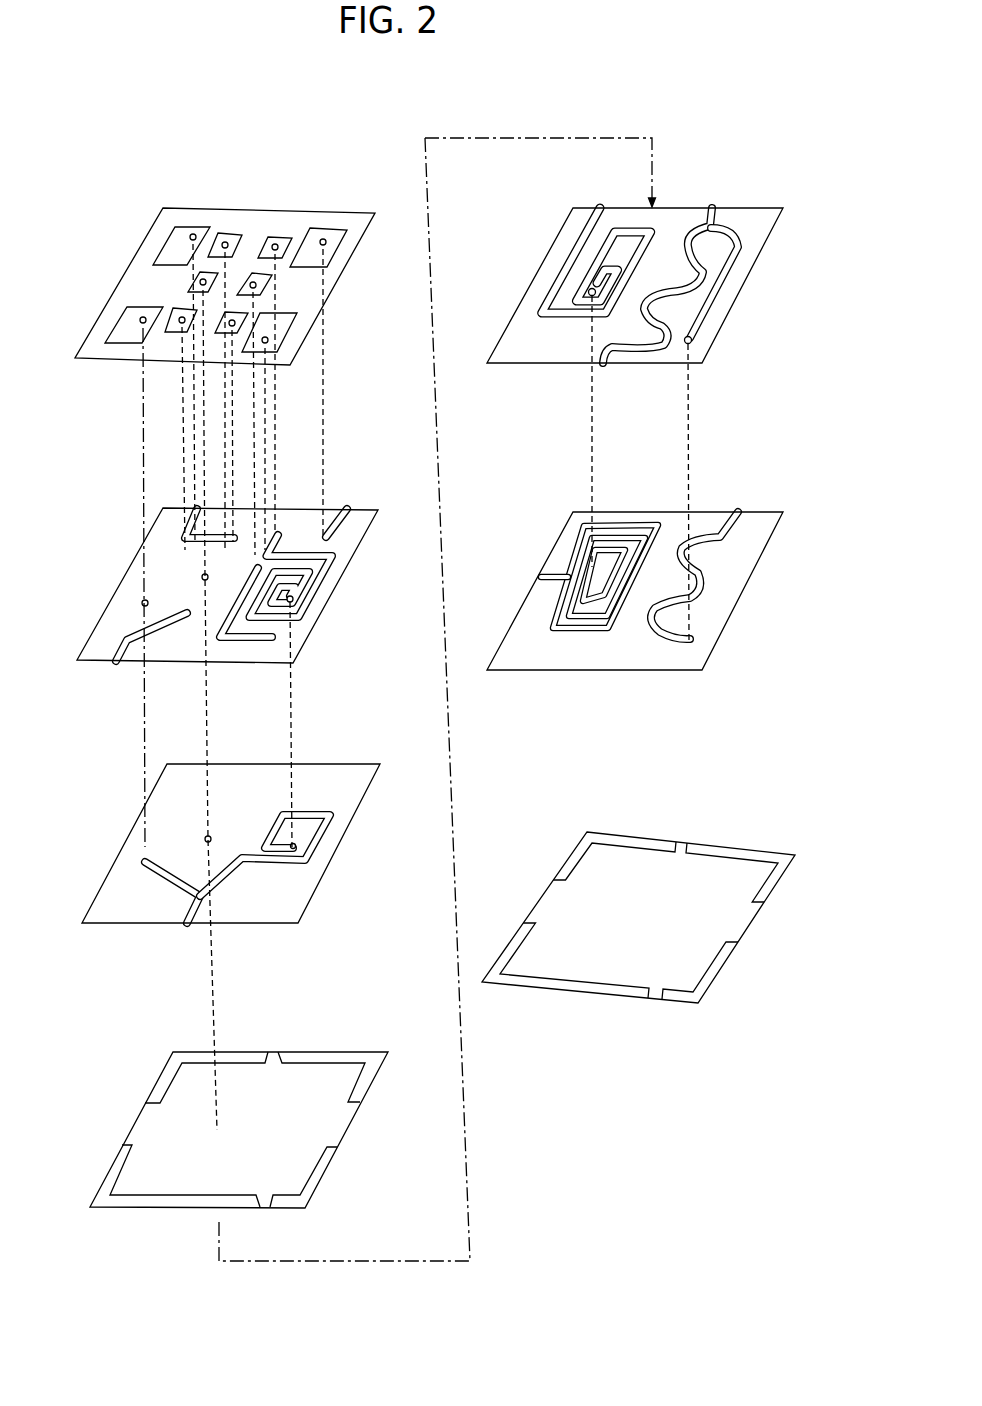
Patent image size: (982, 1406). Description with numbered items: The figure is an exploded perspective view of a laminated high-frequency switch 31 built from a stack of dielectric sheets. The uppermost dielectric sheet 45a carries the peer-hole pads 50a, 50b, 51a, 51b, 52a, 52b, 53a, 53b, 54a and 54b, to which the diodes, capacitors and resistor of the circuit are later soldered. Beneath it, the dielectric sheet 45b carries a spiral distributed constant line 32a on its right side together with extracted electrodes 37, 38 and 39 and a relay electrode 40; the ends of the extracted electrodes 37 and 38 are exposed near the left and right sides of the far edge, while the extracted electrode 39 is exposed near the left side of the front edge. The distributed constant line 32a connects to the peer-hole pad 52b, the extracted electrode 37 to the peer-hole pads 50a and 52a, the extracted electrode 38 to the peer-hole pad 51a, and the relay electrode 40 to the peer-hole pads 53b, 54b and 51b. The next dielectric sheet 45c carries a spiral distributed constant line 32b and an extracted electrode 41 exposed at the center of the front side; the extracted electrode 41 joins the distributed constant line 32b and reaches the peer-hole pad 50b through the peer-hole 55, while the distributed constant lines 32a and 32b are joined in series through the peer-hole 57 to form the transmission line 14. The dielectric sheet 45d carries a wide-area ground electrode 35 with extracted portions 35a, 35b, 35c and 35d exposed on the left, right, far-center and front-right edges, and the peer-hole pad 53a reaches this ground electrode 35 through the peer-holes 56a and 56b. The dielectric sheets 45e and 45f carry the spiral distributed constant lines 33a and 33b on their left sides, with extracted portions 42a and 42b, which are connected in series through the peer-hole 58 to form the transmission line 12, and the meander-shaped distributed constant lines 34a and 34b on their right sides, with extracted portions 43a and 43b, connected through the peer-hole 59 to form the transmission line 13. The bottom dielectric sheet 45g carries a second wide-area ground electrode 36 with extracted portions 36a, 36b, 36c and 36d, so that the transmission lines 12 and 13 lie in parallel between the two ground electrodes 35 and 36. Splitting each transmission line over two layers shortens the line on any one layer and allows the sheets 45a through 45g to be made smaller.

The transmission line 12 is at (535, 188).
The transmission line 13 is at (723, 153).
The transmission line 14 is at (367, 577).
The high-frequency switch 31 is at (138, 208).
The distributed constant line 32a is at (317, 595).
The distributed constant line 32b is at (317, 845).
The distributed constant line 33a is at (577, 235).
The distributed constant line 33b is at (578, 632).
The distributed constant line 34a is at (712, 228).
The distributed constant line 34b is at (710, 582).
The ground electrode 35 is at (241, 1134).
The extracted portion 35a is at (148, 1127).
The extracted portion 35b is at (340, 1127).
The extracted portion 35c is at (273, 1052).
The extracted portion 35d is at (262, 1203).
The ground electrode 36 is at (647, 935).
The extracted portion 36a is at (550, 905).
The extracted portion 36b is at (740, 923).
The extracted portion 36c is at (683, 843).
The extracted portion 36d is at (652, 997).
The extracted electrode 37 is at (192, 523).
The extracted electrode 38 is at (350, 515).
The extracted electrode 39 is at (130, 637).
The relay electrode 40 is at (247, 645).
The extracted electrode 41 is at (180, 903).
The extracted portion 42a is at (597, 210).
The extracted portion 42b is at (543, 577).
The extracted portion 43a is at (599, 362).
The extracted portion 43b is at (738, 517).
The dielectric sheet 45a is at (330, 273).
The dielectric sheet 45b is at (297, 640).
The dielectric sheet 45c is at (305, 888).
The dielectric sheet 45d is at (312, 1183).
The dielectric sheet 45e is at (740, 270).
The dielectric sheet 45f is at (713, 627).
The dielectric sheet 45g is at (703, 983).
The peer-hole pad 50a is at (173, 240).
The peer-hole pad 50b is at (123, 317).
The peer-hole pad 51a is at (328, 228).
The peer-hole pad 51b is at (290, 345).
The peer-hole pad 52a is at (230, 233).
The peer-hole pad 52b is at (280, 237).
The peer-hole pad 53a is at (205, 270).
The peer-hole pad 53b is at (267, 285).
The peer-hole pad 54a is at (184, 308).
The peer-hole pad 54b is at (227, 333).
The peer-hole 55 is at (143, 603).
The peer-hole 56a is at (203, 575).
The peer-hole 56b is at (205, 838).
The peer-hole 57 is at (293, 602).
The peer-hole 58 is at (590, 290).
The peer-hole 59 is at (693, 340).